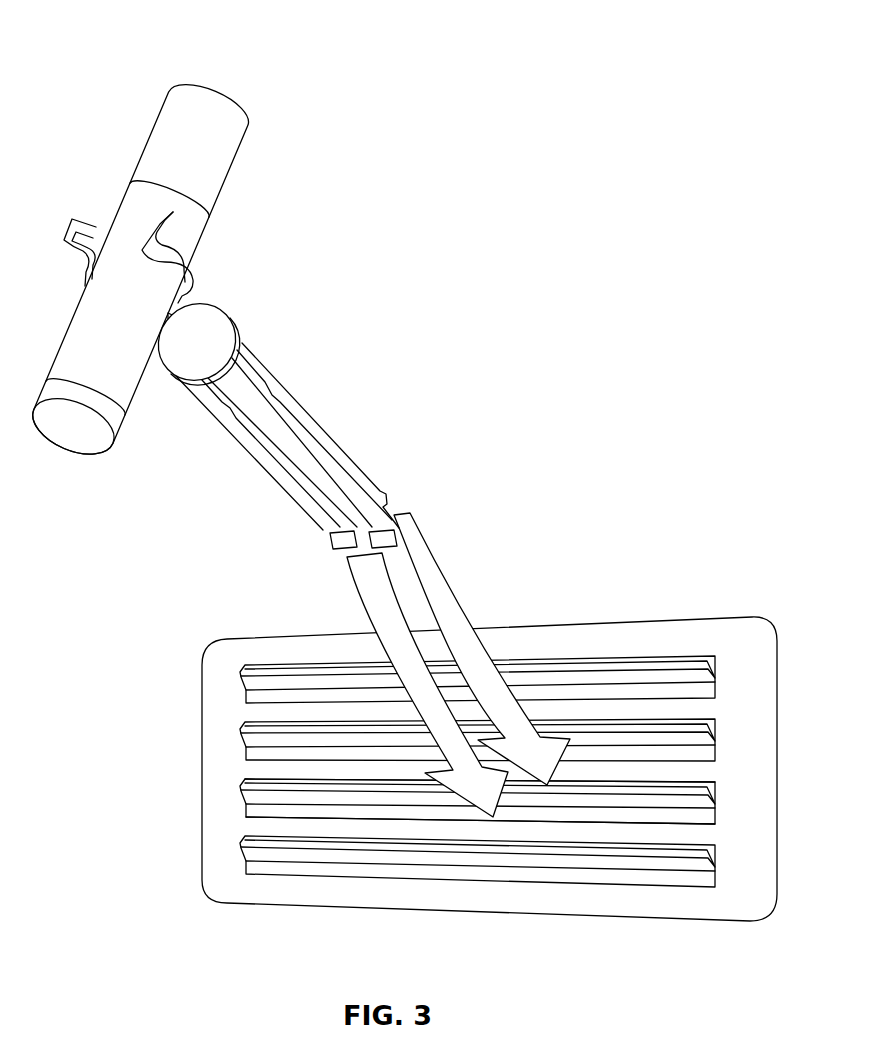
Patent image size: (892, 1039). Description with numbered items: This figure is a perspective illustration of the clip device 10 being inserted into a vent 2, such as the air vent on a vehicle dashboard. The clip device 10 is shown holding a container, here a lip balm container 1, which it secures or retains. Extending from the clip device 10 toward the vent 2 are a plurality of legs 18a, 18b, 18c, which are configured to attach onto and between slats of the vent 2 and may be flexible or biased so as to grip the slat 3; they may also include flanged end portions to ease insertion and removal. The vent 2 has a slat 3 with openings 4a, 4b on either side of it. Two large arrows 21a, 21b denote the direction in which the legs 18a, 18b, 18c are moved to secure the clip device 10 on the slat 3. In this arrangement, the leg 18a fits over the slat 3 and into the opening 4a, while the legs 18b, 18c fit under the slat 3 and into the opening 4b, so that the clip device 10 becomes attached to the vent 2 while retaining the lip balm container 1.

The lip balm container 1 is at (146, 134).
The clip device 10 is at (335, 414).
The leg 18a is at (353, 462).
The leg 18b is at (330, 538).
The leg 18c is at (397, 537).
The insertion direction arrow 21a is at (453, 585).
The insertion direction arrow 21b is at (362, 585).
The vent 2 is at (628, 620).
The slat 3 is at (715, 787).
The opening 4a is at (707, 777).
The opening 4b is at (715, 815).